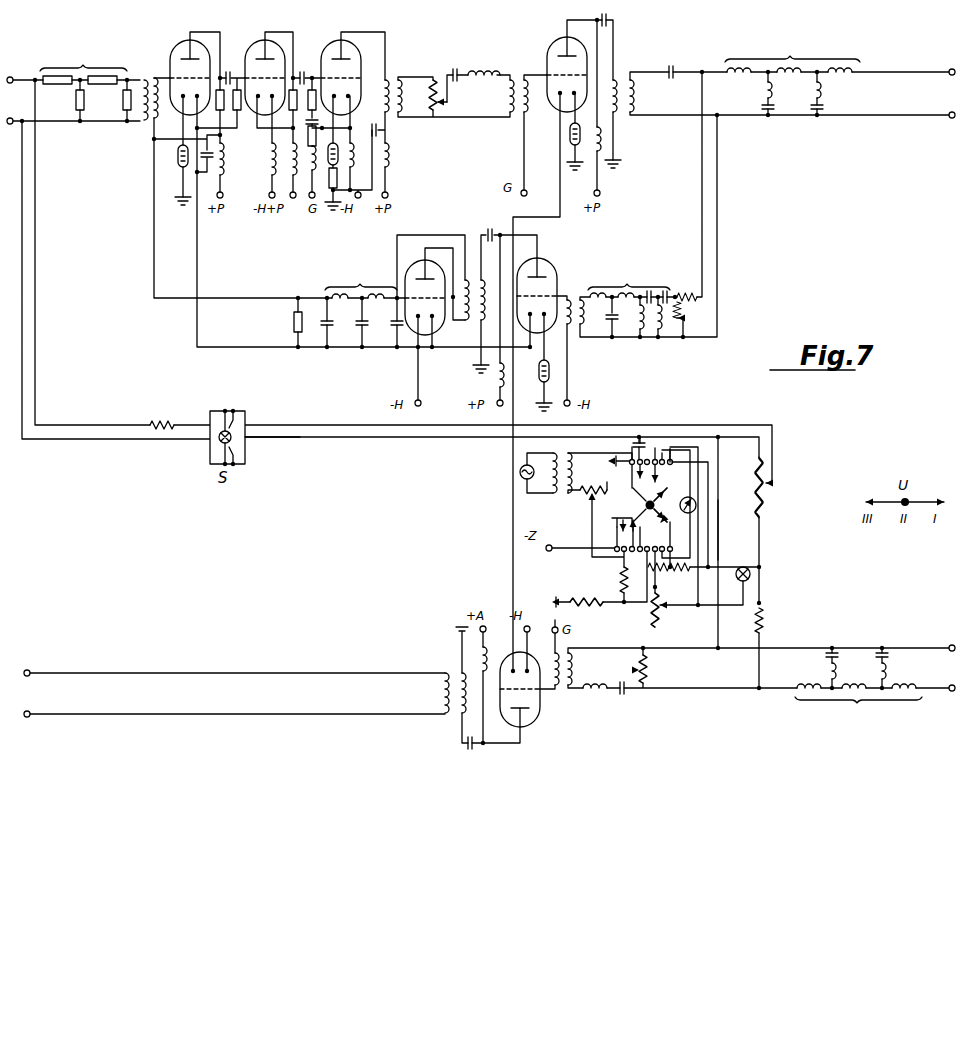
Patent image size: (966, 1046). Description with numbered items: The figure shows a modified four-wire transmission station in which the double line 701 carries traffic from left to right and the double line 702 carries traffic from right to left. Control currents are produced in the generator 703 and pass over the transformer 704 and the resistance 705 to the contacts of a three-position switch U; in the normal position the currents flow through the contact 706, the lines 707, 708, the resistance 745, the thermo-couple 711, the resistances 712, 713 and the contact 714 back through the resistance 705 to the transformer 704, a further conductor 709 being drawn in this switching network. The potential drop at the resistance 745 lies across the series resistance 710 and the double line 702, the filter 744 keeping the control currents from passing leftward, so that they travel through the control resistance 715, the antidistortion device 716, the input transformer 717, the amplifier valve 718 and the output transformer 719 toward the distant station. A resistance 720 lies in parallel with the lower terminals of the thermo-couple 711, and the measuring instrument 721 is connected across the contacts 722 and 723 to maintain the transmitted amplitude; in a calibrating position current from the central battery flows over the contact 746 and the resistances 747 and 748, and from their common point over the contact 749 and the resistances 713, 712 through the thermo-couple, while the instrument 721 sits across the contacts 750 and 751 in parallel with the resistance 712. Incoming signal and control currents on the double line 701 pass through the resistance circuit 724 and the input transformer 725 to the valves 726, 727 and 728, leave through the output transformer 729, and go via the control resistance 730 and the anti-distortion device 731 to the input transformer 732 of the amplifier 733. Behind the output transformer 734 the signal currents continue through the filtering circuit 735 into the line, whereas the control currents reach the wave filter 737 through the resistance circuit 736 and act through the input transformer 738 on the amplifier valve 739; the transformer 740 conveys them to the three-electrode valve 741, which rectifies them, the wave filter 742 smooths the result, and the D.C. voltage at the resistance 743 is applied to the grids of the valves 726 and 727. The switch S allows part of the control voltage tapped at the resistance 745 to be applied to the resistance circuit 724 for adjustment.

The double line 701 is at (18, 85).
The double line 702 is at (56, 677).
The generator 703 is at (519, 474).
The transformer 704 is at (566, 453).
The resistance 705 is at (584, 494).
The contact 706 is at (613, 466).
The line 707 is at (633, 444).
The line 708 is at (692, 435).
The conductor 709 is at (719, 541).
The series resistance 710 is at (763, 620).
The thermo-couple 711 is at (751, 576).
The resistance 712 is at (680, 569).
The resistance 713 is at (657, 572).
The contact 714 is at (628, 516).
The control resistance 715 is at (648, 669).
The antidistortion device 716 is at (598, 691).
The input transformer 717 is at (572, 669).
The amplifier valve 718 is at (539, 712).
The output transformer 719 is at (440, 690).
The control resistance 720 is at (661, 616).
The measuring instrument 721 is at (697, 511).
The contact 722 is at (671, 481).
The contact 723 is at (671, 529).
The resistance circuit 724 is at (87, 79).
The input transformer 725 is at (146, 90).
The valve 726 is at (174, 56).
The valve 727 is at (251, 56).
The valve 728 is at (327, 56).
The output transformer 729 is at (397, 85).
The control resistance 730 is at (435, 84).
The anti-distortion device 731 is at (476, 66).
The input transformer 732 is at (519, 85).
The amplifier 733 is at (553, 53).
The output transformer 734 is at (627, 85).
The filtering circuit 735 is at (789, 75).
The resistance circuit 736 is at (690, 294).
The wave filter 737 is at (628, 300).
The input transformer 738 is at (571, 303).
The amplifier valve 739 is at (548, 264).
The transformer 740 is at (470, 324).
The three-electrode valve 741 is at (416, 264).
The wave filter 742 is at (362, 297).
The resistance 743 is at (295, 305).
The filter 744 is at (856, 687).
The resistance 745 is at (765, 502).
The contact 746 is at (620, 531).
The resistance 747 is at (620, 583).
The resistance 748 is at (585, 600).
The contact 749 is at (632, 541).
The contact 750 is at (680, 453).
The contact 751 is at (666, 531).